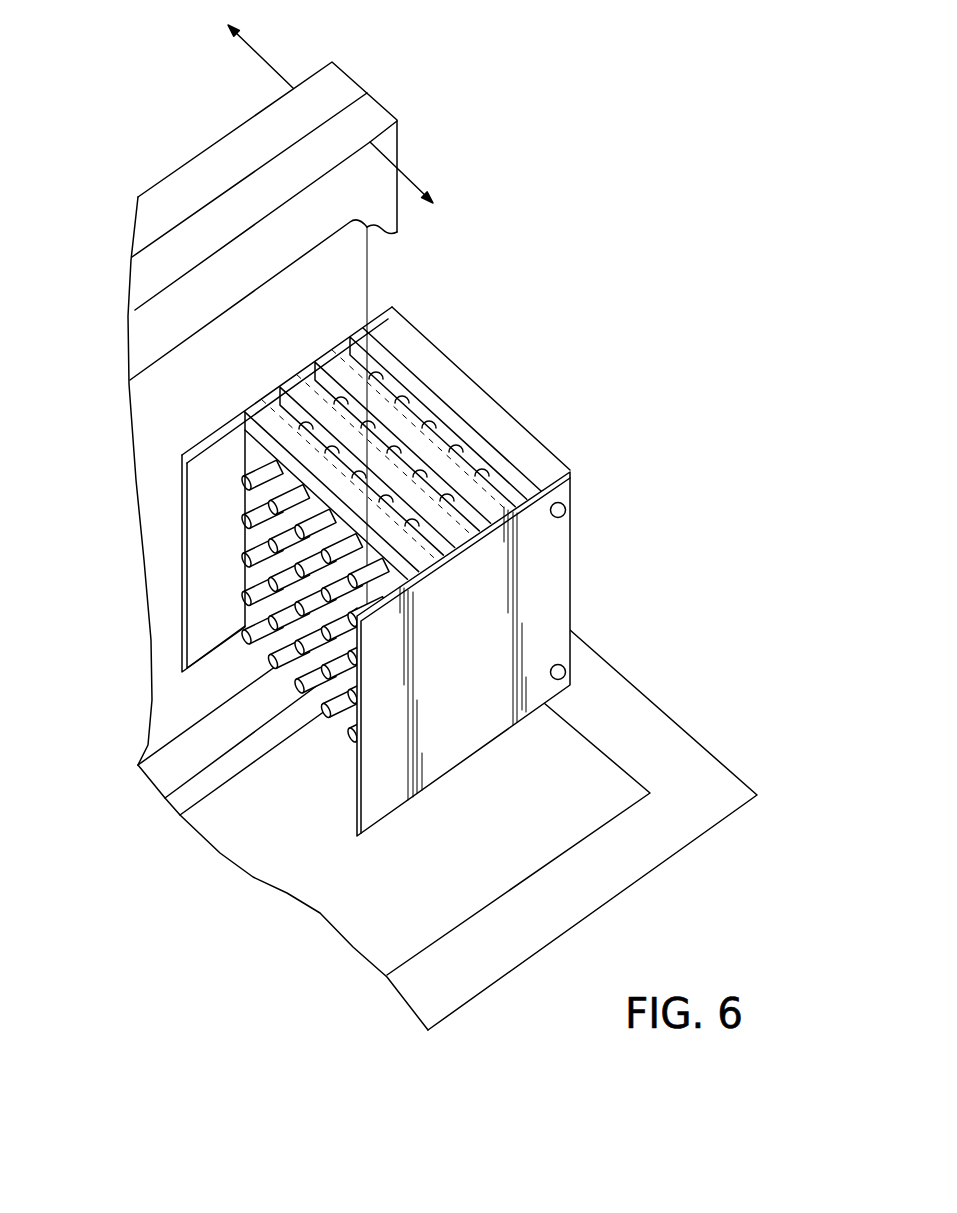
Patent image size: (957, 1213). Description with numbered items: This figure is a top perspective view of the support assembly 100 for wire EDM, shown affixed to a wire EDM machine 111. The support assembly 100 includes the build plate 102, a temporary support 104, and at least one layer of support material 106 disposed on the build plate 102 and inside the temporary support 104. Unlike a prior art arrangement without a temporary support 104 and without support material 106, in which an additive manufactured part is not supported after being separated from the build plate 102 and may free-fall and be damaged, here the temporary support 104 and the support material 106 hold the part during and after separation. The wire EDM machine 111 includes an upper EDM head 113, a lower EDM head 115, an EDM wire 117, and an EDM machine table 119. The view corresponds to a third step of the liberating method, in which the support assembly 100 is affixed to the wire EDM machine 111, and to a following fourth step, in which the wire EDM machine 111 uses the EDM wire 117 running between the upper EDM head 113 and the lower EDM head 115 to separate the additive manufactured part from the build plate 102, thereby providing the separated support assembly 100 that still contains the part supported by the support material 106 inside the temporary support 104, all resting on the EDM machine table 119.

The support assembly 100 is at (567, 294).
The build plate 102 is at (547, 447).
The temporary support 104 is at (572, 580).
The support material 106 is at (335, 388).
The wire EDM machine 111 is at (410, 146).
The upper EDM head 113 is at (223, 138).
The lower EDM head 115 is at (163, 745).
The EDM wire 117 is at (372, 278).
The EDM machine table 119 is at (662, 708).